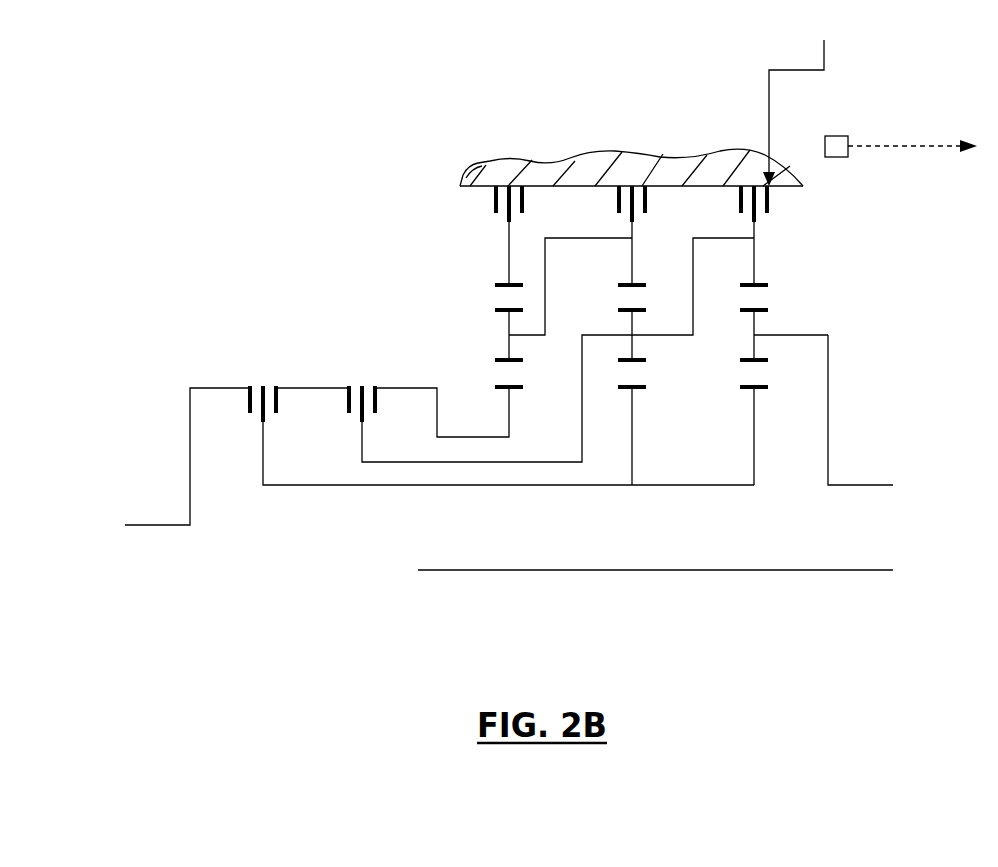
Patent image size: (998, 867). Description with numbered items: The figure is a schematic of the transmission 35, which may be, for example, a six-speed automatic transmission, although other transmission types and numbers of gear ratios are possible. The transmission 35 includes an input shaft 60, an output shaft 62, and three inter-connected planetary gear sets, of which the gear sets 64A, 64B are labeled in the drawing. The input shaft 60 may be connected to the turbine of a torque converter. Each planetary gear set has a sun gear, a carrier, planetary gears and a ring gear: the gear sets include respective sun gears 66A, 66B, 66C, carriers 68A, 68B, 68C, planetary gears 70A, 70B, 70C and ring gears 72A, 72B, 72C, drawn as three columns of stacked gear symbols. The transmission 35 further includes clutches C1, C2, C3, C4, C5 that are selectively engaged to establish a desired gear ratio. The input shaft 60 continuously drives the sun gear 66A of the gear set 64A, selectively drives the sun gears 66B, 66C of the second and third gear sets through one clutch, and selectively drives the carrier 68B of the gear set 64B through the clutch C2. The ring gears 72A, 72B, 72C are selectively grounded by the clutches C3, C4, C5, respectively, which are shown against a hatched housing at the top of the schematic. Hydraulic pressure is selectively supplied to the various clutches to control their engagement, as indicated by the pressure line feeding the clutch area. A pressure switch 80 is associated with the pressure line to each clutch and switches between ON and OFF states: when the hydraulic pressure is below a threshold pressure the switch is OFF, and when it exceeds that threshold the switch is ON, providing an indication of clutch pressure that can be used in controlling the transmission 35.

The transmission 35 is at (236, 167).
The input shaft 60 is at (139, 529).
The output shaft 62 is at (877, 485).
The planetary gear set 64A is at (498, 319).
The planetary gear set 64B is at (723, 350).
The sun gear 66A is at (508, 387).
The sun gear 66B is at (635, 388).
The sun gear 66C is at (758, 388).
The carrier 68A is at (538, 336).
The carrier 68B is at (677, 337).
The carrier 68C is at (795, 336).
The planetary gear 70A is at (508, 340).
The planetary gear 70B is at (628, 326).
The planetary gear 70C is at (756, 322).
The ring gear 72A is at (507, 284).
The ring gear 72B is at (626, 282).
The ring gear 72C is at (758, 282).
The pressure switch 80 is at (836, 136).
The clutch C1 is at (248, 399).
The clutch C2 is at (347, 399).
The clutch C3 is at (494, 200).
The clutch C4 is at (618, 200).
The clutch C5 is at (740, 197).